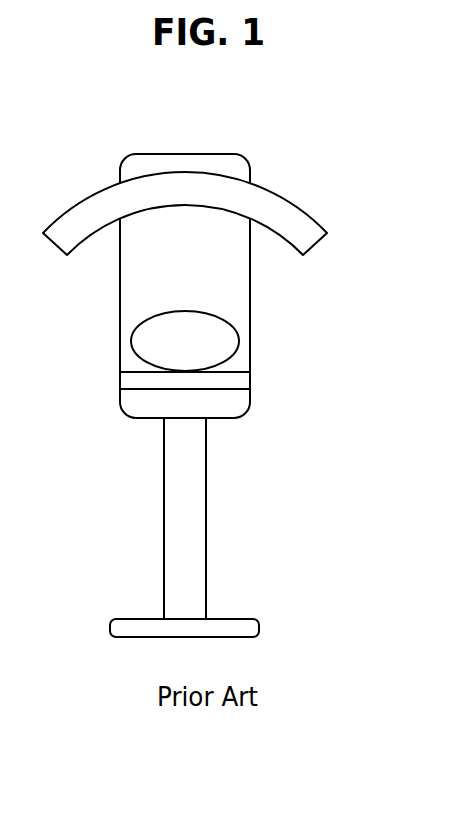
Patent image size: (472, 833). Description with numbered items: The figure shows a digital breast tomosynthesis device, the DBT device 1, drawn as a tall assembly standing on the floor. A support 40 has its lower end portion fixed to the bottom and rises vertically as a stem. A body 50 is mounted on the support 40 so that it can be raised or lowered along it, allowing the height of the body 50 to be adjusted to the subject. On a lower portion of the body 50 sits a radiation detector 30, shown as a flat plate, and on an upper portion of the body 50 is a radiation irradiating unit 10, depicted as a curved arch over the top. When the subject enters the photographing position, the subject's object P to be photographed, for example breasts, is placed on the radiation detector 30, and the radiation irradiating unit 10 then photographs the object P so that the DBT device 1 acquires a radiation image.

The DBT device 1 is at (306, 168).
The radiation irradiating unit 10 is at (307, 236).
The body 50 is at (236, 283).
The object P is at (226, 340).
The radiation detector 30 is at (236, 380).
The support 40 is at (192, 517).